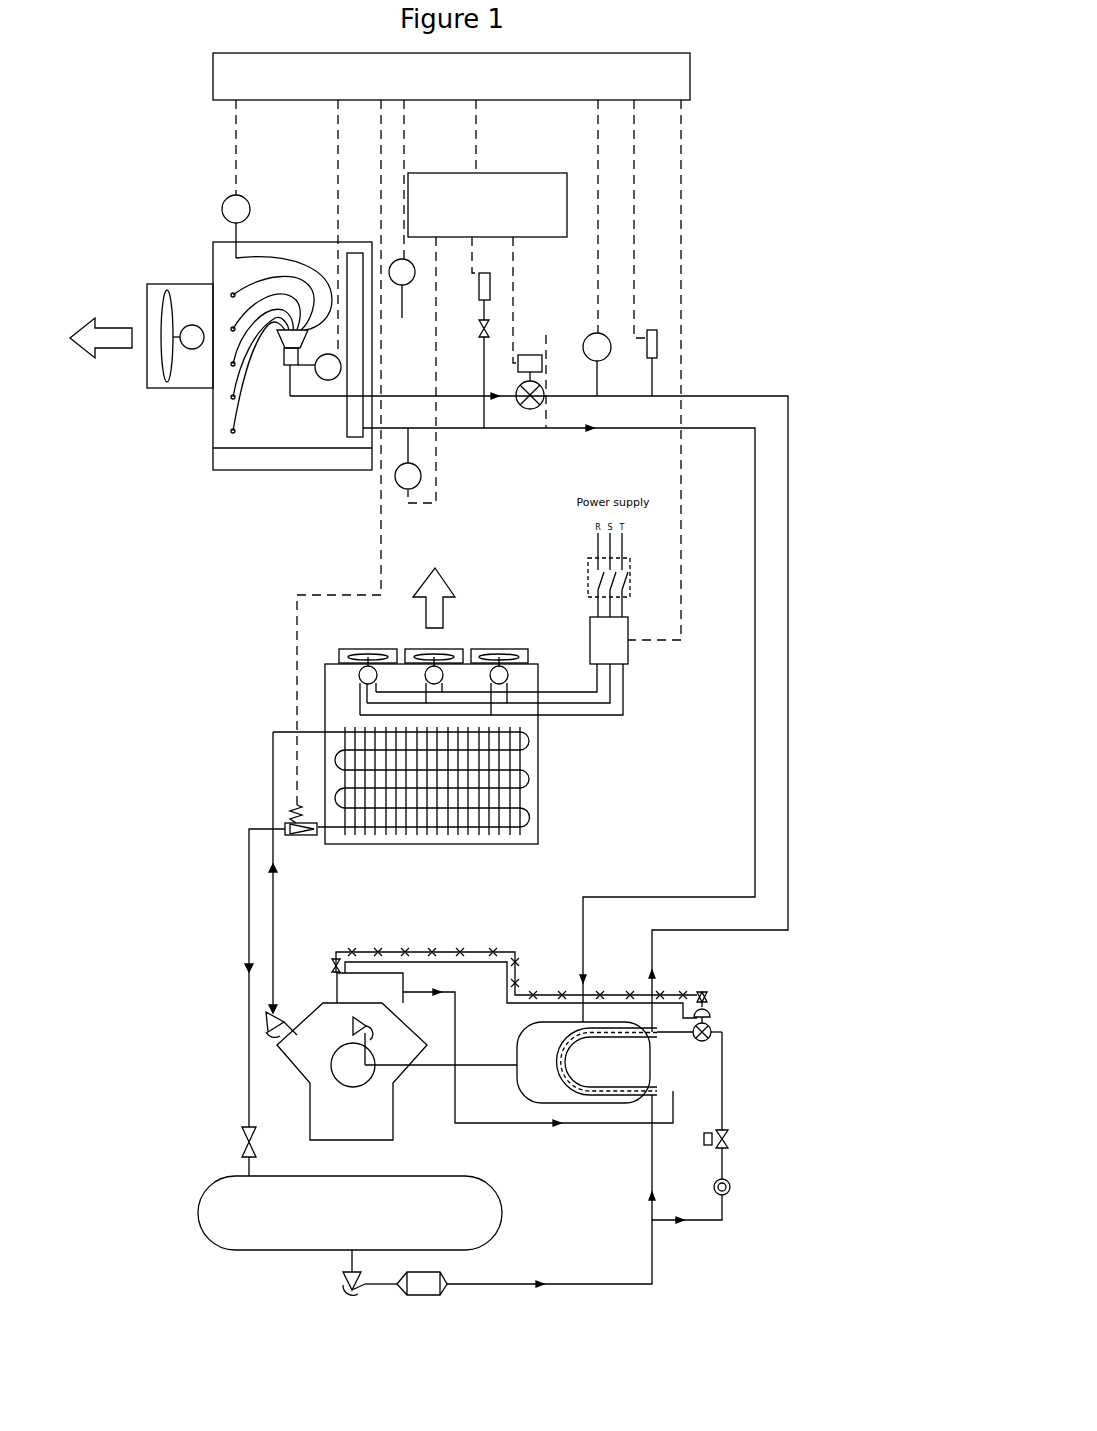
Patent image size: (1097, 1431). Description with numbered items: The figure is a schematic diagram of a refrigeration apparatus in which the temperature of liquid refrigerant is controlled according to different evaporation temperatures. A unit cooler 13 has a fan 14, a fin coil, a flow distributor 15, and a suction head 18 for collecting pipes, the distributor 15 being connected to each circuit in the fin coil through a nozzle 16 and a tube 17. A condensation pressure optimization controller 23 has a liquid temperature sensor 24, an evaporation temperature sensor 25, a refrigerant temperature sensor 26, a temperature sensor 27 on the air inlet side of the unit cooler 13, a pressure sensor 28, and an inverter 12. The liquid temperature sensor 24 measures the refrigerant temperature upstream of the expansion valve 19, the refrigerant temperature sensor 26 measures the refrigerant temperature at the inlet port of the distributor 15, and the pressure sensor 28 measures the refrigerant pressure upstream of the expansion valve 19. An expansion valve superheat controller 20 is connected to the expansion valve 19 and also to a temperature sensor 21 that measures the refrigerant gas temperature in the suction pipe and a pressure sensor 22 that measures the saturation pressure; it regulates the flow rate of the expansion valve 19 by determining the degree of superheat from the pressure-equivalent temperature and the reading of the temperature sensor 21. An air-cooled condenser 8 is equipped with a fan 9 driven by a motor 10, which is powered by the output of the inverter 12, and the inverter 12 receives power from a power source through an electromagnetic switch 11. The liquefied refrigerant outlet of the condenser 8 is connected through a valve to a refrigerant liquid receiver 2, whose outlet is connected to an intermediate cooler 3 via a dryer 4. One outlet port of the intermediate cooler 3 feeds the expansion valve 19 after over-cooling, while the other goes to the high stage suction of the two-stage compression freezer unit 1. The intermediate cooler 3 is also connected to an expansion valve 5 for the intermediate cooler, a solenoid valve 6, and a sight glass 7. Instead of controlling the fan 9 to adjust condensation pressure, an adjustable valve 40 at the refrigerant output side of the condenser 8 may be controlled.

The two-stage compression freezer unit 1 is at (310, 1105).
The refrigerant liquid receiver 2 is at (198, 1210).
The intermediate cooler 3 is at (517, 1040).
The dryer 4 is at (440, 1297).
The expansion valve for the intermediate cooler 5 is at (712, 1022).
The solenoid valve 6 is at (730, 1138).
The sight glass 7 is at (731, 1187).
The air-cooled condenser 8 is at (538, 825).
The fan 9 is at (345, 649).
The motor 10 is at (358, 678).
The electromagnetic switch 11 is at (588, 582).
The inverter 12 is at (590, 640).
The unit cooler 13 is at (213, 447).
The fan 14 is at (172, 284).
The flow distributor 15 is at (284, 360).
The nozzle 16 is at (318, 335).
The tube 17 is at (285, 247).
The suction head 18 is at (363, 345).
The expansion valve 19 is at (528, 355).
The expansion valve superheat controller 20 is at (540, 173).
The temperature sensor 21 is at (408, 490).
The pressure sensor for the expansion valve 22 is at (478, 290).
The condensation pressure optimization controller 23 is at (690, 76).
The liquid temperature sensor 24 is at (585, 340).
The evaporation temperature sensor 25 is at (222, 209).
The refrigerant temperature sensor 26 is at (328, 380).
The temperature sensor 27 is at (391, 262).
The pressure sensor 28 is at (647, 360).
The adjustable valve 40 is at (300, 838).